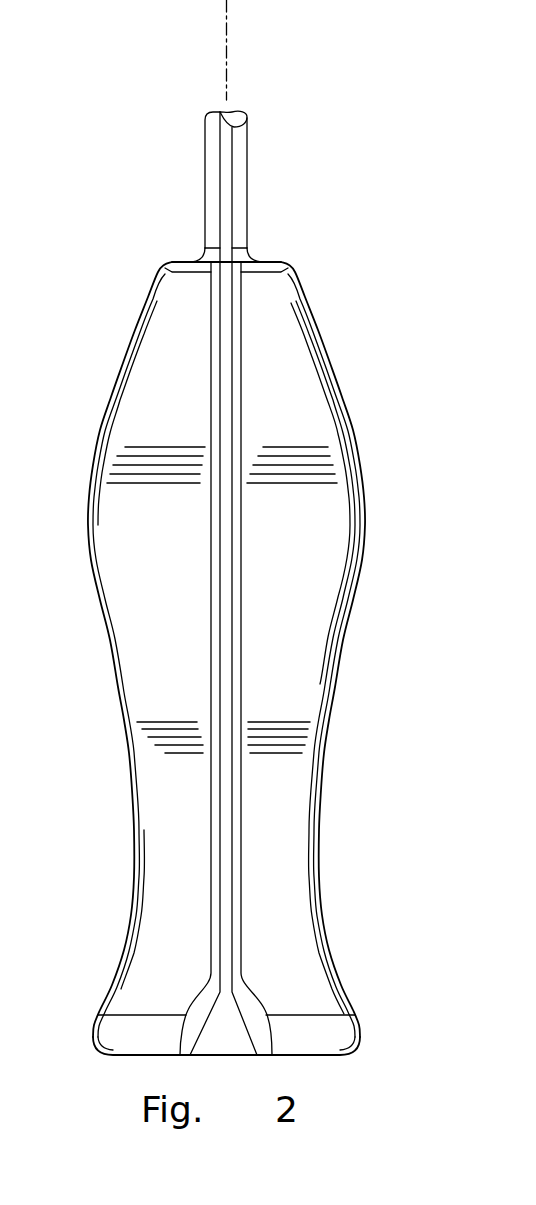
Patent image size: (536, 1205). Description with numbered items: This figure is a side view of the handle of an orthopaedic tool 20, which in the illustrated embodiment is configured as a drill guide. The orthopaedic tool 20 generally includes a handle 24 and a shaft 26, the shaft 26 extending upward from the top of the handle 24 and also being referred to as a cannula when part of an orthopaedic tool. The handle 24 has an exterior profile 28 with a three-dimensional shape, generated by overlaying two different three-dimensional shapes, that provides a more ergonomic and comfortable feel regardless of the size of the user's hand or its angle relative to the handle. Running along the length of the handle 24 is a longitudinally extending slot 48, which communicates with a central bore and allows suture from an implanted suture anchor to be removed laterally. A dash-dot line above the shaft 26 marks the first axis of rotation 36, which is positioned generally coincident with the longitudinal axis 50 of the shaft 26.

The orthopaedic tool 20 is at (342, 332).
The handle 24 is at (118, 848).
The shaft 26 is at (203, 163).
The exterior profile 28 is at (130, 793).
The first axis of rotation 36 is at (293, 50).
The longitudinally extending slot 48 is at (220, 662).
The longitudinal axis 50 is at (227, 32).